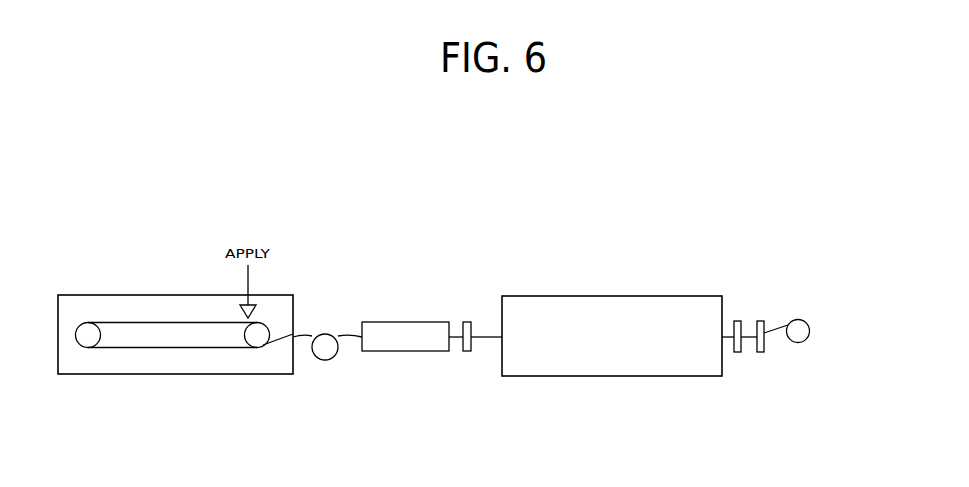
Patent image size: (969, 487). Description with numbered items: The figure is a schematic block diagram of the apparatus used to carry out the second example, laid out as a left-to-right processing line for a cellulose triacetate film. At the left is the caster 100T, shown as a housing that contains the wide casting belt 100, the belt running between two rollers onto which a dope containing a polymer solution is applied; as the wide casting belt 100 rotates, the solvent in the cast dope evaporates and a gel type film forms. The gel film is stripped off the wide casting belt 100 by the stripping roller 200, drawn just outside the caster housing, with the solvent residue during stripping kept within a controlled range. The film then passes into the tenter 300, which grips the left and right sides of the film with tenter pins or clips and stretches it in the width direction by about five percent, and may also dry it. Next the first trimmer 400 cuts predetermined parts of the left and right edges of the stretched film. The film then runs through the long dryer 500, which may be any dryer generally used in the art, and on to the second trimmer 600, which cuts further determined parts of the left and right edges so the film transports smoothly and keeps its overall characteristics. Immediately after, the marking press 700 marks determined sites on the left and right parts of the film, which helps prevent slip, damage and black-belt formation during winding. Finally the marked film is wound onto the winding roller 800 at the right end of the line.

The wide casting belt 100 is at (137, 322).
The caster 100T is at (115, 375).
The stripping roller 200 is at (319, 363).
The tenter 300 is at (393, 322).
The first trimmer 400 is at (467, 322).
The dryer 500 is at (549, 296).
The second trimmer 600 is at (740, 321).
The marking press 700 is at (765, 352).
The winding roller 800 is at (810, 329).